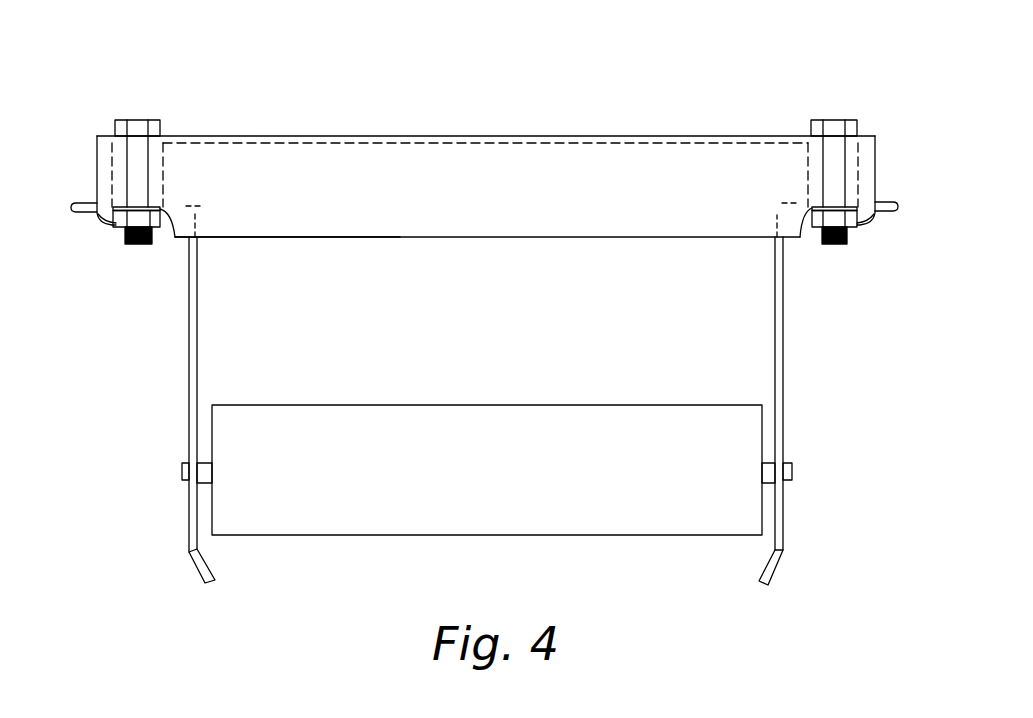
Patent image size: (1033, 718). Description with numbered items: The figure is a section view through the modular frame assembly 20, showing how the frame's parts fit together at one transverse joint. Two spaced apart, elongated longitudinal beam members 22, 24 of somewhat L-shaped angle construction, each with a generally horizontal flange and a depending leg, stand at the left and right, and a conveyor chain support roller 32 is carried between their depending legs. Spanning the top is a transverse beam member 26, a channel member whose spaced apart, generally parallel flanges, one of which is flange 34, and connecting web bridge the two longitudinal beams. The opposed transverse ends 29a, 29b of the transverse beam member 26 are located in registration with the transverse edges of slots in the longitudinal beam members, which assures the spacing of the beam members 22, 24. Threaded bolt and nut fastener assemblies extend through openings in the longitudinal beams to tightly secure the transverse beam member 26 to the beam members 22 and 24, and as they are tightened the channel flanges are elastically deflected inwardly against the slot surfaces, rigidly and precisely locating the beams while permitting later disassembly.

The modular frame assembly 20 is at (664, 60).
The longitudinal beam member 22 is at (802, 411).
The longitudinal beam member 24 is at (188, 410).
The transverse beam member 26 is at (420, 136).
The transverse end 29a is at (877, 158).
The transverse end 29b is at (97, 160).
The conveyor chain support roller 32 is at (415, 405).
The flange 34 is at (213, 230).